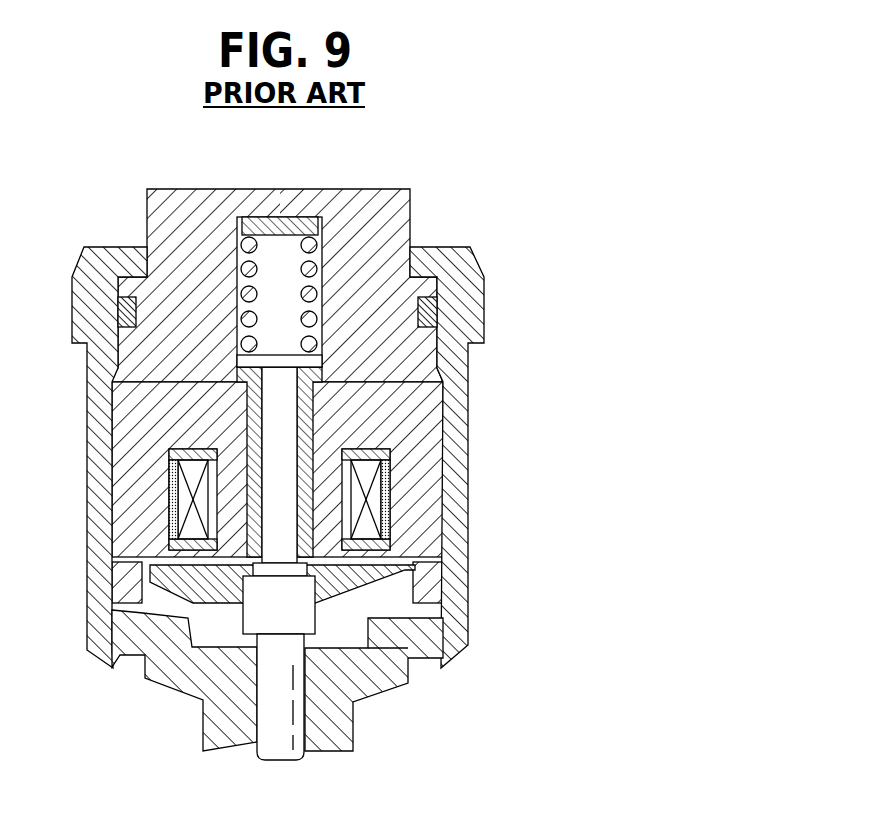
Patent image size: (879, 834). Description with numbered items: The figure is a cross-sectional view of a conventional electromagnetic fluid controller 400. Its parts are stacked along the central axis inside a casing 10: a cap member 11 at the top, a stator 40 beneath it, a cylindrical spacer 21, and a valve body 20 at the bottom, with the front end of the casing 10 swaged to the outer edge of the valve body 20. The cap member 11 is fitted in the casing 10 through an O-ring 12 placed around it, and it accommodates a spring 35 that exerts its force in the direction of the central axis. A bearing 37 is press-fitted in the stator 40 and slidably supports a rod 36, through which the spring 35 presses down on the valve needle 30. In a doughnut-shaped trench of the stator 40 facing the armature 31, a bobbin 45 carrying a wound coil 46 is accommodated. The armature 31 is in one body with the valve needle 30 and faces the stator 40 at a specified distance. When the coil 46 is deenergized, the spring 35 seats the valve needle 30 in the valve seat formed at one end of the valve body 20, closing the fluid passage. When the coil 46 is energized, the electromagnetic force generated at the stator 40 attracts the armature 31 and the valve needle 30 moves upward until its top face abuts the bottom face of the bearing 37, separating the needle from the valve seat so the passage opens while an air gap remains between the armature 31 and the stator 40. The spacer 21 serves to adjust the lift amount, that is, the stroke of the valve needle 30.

The electromagnetic fluid controller 400 is at (108, 206).
The cap member 11 is at (190, 195).
The casing 10 is at (473, 268).
The O-ring 12 is at (437, 305).
The spring 35 is at (320, 258).
The bearing 37 is at (313, 395).
The rod 36 is at (290, 426).
The bobbin 45 is at (372, 450).
The coil 46 is at (380, 478).
The stator 40 is at (428, 513).
The armature 31 is at (395, 572).
The spacer 21 is at (433, 590).
The valve needle 30 is at (300, 693).
The valve body 20 is at (335, 728).